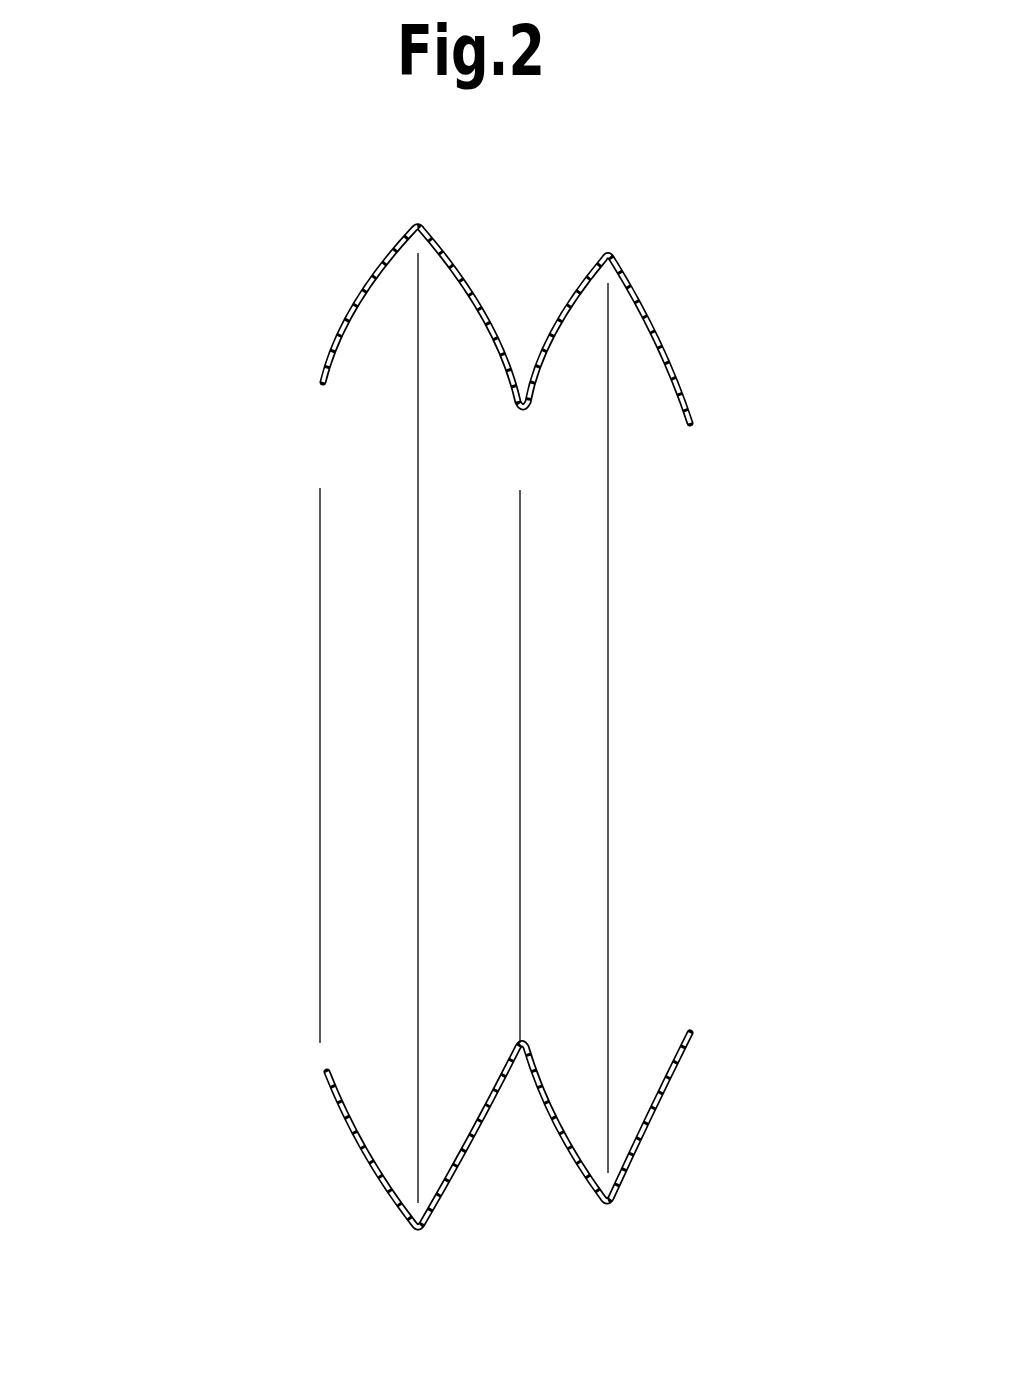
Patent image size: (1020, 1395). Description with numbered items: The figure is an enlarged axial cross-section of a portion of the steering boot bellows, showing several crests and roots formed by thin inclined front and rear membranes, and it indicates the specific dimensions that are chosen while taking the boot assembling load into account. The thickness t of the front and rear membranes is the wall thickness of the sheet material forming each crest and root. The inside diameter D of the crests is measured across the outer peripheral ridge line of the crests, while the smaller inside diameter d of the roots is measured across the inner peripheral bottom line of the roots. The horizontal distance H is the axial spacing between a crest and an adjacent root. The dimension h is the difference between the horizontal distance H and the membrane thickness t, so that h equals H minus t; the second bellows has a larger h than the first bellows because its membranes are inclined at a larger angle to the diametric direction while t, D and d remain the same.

The inside diameter of the crests D is at (418, 1222).
The inside diameter of the roots d is at (522, 1043).
The horizontal distance between the crests and roots H is at (519, 1047).
The dimension h is at (790, 1160).
The thickness of the front and rear membranes t is at (372, 328).